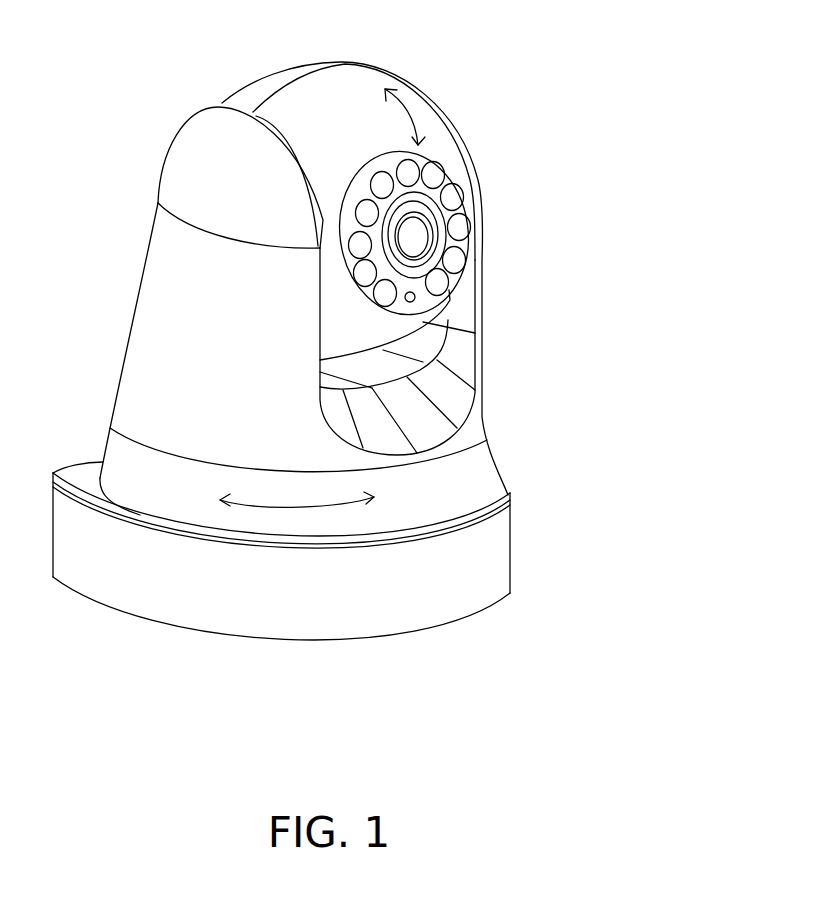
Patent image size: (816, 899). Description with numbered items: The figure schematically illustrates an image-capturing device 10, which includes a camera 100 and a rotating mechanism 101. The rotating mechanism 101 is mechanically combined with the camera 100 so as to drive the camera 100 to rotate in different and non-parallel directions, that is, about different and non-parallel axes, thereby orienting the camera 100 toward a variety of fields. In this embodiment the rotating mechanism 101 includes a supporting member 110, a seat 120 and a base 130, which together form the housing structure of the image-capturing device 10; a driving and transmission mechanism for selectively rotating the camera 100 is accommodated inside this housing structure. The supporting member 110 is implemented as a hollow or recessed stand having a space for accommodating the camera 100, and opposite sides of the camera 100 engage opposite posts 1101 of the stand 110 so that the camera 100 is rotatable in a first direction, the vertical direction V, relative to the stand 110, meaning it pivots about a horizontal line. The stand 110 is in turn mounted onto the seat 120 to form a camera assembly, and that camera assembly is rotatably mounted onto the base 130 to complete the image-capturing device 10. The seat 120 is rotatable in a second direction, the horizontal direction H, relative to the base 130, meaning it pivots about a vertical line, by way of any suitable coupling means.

The image-capturing device 10 is at (556, 688).
The camera 100 is at (359, 83).
The rotating mechanism 101 is at (257, 80).
The supporting member 110 is at (193, 136).
The posts 1101 is at (163, 305).
The seat 120 is at (482, 470).
The base 130 is at (257, 610).
The vertical direction V is at (410, 115).
The horizontal direction H is at (342, 507).